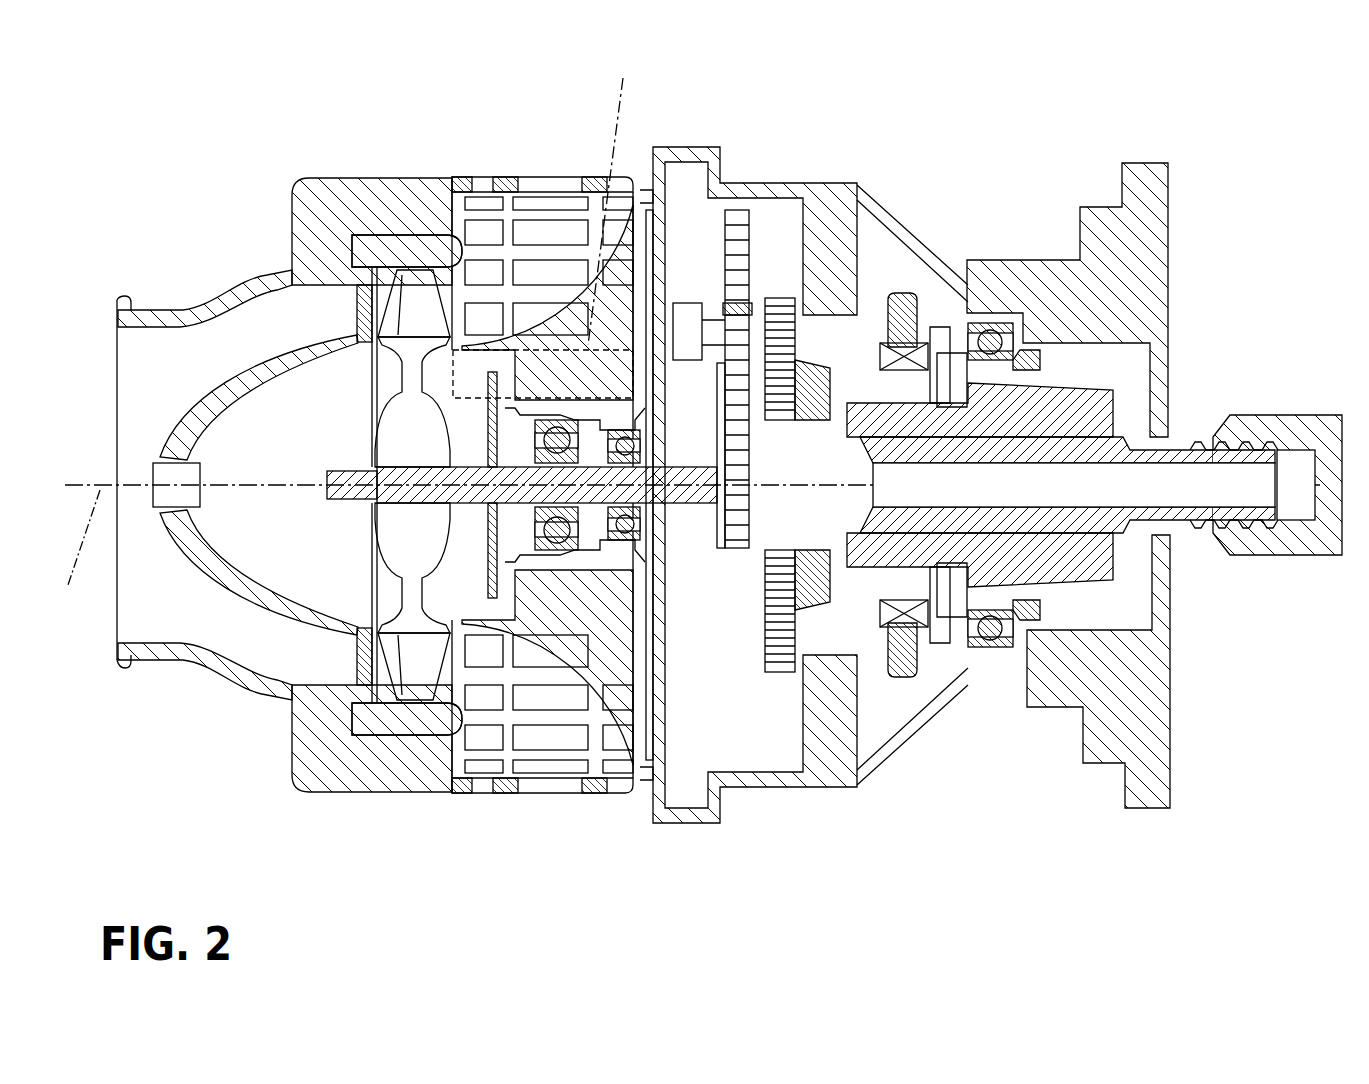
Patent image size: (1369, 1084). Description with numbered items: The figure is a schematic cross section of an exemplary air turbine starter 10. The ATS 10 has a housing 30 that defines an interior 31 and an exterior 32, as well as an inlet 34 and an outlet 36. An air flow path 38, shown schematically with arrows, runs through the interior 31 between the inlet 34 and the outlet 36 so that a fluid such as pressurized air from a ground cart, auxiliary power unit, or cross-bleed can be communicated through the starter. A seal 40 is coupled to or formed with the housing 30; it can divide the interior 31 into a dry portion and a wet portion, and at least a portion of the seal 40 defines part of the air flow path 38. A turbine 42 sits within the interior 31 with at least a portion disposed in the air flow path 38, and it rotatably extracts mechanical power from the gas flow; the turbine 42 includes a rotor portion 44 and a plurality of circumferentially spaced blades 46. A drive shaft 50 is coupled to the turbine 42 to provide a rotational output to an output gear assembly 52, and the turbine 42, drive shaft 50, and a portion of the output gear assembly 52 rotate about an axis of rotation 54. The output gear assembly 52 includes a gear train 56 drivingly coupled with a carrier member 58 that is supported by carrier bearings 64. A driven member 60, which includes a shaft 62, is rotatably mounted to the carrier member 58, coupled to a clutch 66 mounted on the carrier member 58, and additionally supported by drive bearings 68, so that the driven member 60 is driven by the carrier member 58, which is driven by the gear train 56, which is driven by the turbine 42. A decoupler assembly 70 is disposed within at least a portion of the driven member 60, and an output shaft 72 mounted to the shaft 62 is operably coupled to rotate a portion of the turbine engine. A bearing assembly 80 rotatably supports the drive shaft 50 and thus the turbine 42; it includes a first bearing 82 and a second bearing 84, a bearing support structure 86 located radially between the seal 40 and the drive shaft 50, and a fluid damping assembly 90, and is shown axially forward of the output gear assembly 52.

The air turbine starter 10 is at (272, 80).
The housing 30 is at (340, 180).
The interior 31 is at (190, 612).
The exterior 32 is at (184, 833).
The inlet 34 is at (138, 365).
The outlet 36 is at (568, 172).
The air flow path 38 is at (268, 337).
The seal 40 is at (585, 775).
The turbine 42 is at (470, 600).
The rotor portion 44 is at (402, 567).
The blades 46 is at (440, 562).
The drive shaft 50 is at (357, 470).
The output gear assembly 52 is at (702, 240).
The axis of rotation 54 is at (71, 551).
The gear train 56 is at (781, 298).
The carrier member 58 is at (770, 605).
The driven member 60 is at (900, 300).
The shaft 62 is at (1113, 437).
The carrier bearings 64 is at (845, 650).
The clutch 66 is at (985, 655).
The drive bearings 68 is at (1005, 650).
The decoupler assembly 70 is at (1250, 560).
The output shaft 72 is at (1300, 418).
The bearing assembly 80 is at (445, 300).
The first bearing 82 is at (527, 432).
The second bearing 84 is at (630, 555).
The bearing support structure 86 is at (563, 570).
The fluid damping assembly 90 is at (587, 347).